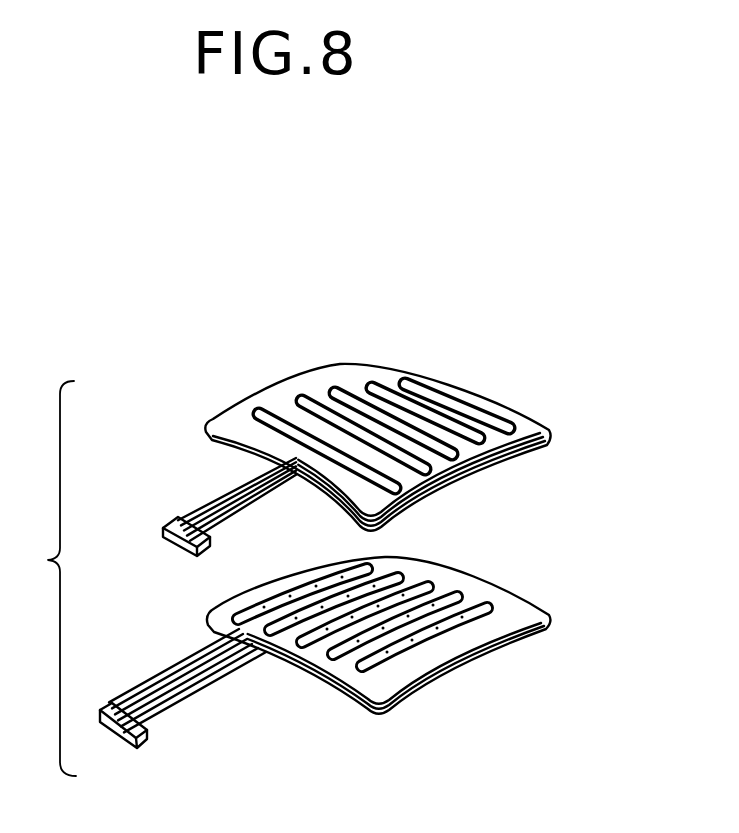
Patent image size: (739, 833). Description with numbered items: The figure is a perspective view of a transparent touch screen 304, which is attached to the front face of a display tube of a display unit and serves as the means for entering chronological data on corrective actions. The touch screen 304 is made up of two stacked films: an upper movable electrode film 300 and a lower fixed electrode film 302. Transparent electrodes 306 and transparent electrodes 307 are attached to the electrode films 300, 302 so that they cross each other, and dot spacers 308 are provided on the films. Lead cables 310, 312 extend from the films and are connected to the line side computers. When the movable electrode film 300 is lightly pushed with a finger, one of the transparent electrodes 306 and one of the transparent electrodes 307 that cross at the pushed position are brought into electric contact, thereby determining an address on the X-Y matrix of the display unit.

The movable electrode film 300 is at (315, 368).
The fixed electrode film 302 is at (455, 672).
The transparent touch screen 304 is at (462, 309).
The transparent electrodes 306 is at (488, 420).
The transparent electrodes 307 is at (517, 638).
The dot spacers 308 is at (270, 605).
The lead cable 310 is at (181, 498).
The lead cable 312 is at (150, 668).